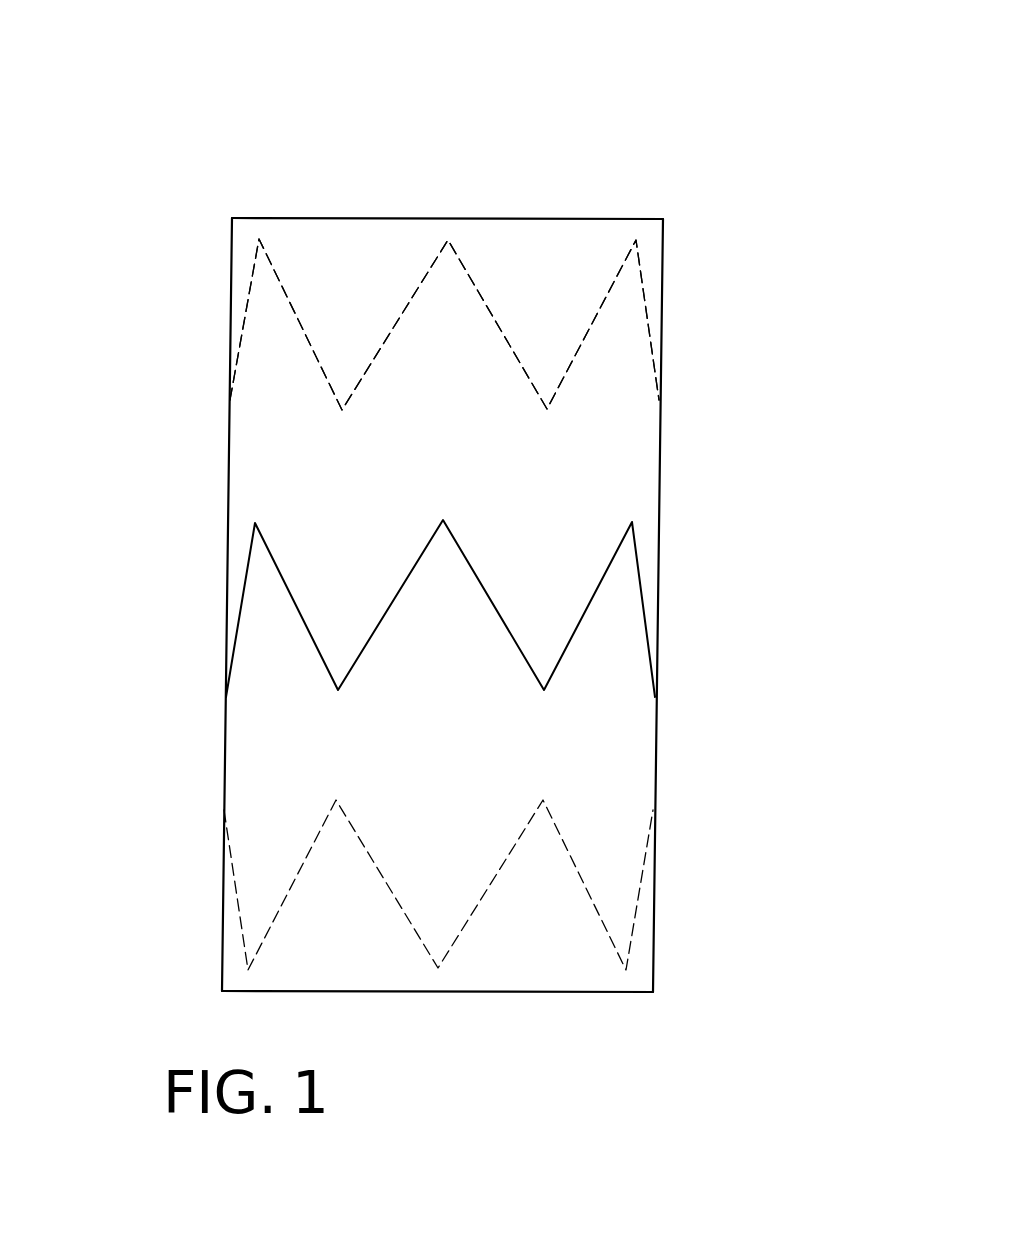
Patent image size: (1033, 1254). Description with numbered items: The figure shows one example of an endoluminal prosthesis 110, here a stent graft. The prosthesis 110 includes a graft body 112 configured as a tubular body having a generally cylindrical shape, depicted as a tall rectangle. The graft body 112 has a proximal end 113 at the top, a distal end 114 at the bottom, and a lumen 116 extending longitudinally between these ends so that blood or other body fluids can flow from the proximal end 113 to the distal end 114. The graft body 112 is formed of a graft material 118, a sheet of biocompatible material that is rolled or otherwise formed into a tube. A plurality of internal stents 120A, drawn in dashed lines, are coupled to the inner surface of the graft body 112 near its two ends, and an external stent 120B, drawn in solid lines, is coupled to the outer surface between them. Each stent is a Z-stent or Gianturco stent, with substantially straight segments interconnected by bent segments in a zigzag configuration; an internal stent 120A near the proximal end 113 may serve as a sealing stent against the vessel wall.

The endoluminal prosthesis 110 is at (446, 538).
The graft body 112 is at (535, 587).
The proximal end 113 is at (557, 218).
The distal end 114 is at (588, 993).
The lumen 116 is at (423, 218).
The graft material 118 is at (339, 273).
The internal stents 120A is at (300, 325).
The external stent 120B is at (588, 606).